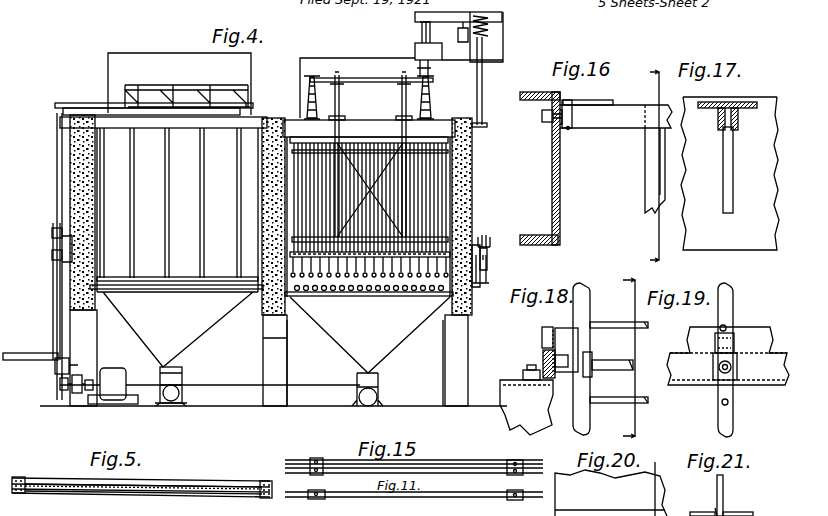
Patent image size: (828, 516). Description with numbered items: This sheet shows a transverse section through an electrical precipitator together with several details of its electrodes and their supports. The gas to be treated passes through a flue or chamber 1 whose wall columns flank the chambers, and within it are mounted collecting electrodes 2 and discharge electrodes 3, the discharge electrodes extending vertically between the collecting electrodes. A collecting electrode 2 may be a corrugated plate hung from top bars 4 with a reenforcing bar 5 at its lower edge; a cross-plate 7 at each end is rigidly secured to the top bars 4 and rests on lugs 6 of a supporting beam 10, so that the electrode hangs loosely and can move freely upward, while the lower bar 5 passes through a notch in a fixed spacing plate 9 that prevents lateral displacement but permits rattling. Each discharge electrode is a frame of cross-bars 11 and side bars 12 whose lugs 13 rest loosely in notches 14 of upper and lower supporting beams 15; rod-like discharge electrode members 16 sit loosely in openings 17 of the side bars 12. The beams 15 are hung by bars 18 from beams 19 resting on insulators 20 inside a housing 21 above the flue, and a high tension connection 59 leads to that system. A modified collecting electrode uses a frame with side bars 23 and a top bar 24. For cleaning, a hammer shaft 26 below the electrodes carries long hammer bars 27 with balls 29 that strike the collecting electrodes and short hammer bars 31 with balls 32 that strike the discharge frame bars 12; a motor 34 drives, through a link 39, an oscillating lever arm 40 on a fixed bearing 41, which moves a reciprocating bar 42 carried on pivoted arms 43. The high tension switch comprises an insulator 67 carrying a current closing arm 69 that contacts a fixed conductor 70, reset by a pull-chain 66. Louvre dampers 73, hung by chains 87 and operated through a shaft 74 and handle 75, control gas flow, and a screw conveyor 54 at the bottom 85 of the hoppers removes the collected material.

In FIG. 4, the flue or chamber 1 is at (93, 178).
In FIG. 4, the collecting electrode 2 is at (447, 200).
In FIG. 5, the collecting electrode 2 is at (195, 486).
In FIG. 16, the collecting electrode 2 is at (652, 175).
In FIG. 17, the collecting electrode 2 is at (727, 157).
In FIG. 20, the collecting electrode 2 is at (633, 492).
In FIG. 21, the collecting electrode 2 is at (723, 492).
In FIG. 4, the discharge electrode 3 is at (445, 217).
In FIG. 5, the top bar 4 is at (53, 479).
In FIG. 16, the top bar 4 is at (630, 123).
In FIG. 17, the top bar 4 is at (713, 112).
In FIG. 21, the reenforcing bar 5 is at (715, 508).
In FIG. 16, the lug 6 is at (568, 128).
In FIG. 17, the lug 6 is at (733, 103).
In FIG. 5, the cross-plate 7 is at (20, 477).
In FIG. 16, the cross-plate 7 is at (613, 100).
In FIG. 17, the cross-plate 7 is at (757, 102).
In FIG. 21, the spacing plate 9 is at (700, 512).
In FIG. 16, the supporting beam 10 is at (560, 200).
In FIG. 18, the cross-bar 11 is at (612, 370).
In FIG. 19, the cross-bar 11 is at (717, 372).
In FIG. 18, the side bar 12 is at (583, 307).
In FIG. 19, the side bar 12 is at (733, 417).
In FIG. 18, the lug 13 is at (542, 332).
In FIG. 19, the notch 14 is at (730, 325).
In FIG. 18, the supporting beam 15 is at (543, 356).
In FIG. 19, the supporting beam 15 is at (750, 338).
In FIG. 18, the discharge electrode member 16 is at (612, 327).
In FIG. 19, the discharge electrode member 16 is at (728, 402).
In FIG. 16, the hole or opening 17 is at (645, 167).
In FIG. 4, the bar 18 is at (339, 95).
In FIG. 4, the beam 19 is at (363, 78).
In FIG. 18, the beam 19 is at (621, 358).
In FIG. 4, the insulator 20 is at (307, 98).
In FIG. 4, the housing 21 is at (300, 72).
In FIG. 20, the housing 21 is at (654, 482).
In FIG. 15, the side bar 23 is at (310, 459).
In FIG. 15, the top bar 24 is at (485, 473).
In FIG. 4, the hammer shaft 26 is at (292, 254).
In FIG. 4, the long hammer bar 27 is at (345, 293).
In FIG. 4, the ball 29 is at (363, 294).
In FIG. 4, the short hammer bar 31 is at (292, 272).
In FIG. 4, the ball 32 is at (394, 294).
In FIG. 4, the motor 34 is at (120, 372).
In FIG. 4, the link 39 is at (60, 313).
In FIG. 4, the oscillating lever arm 40 is at (494, 239).
In FIG. 4, the fixed bearing 41 is at (492, 245).
In FIG. 4, the reciprocating bar 42 is at (486, 284).
In FIG. 4, the pivoted arm 43 is at (490, 262).
In FIG. 4, the screw conveyor 54 is at (183, 399).
In FIG. 4, the connection 59 is at (427, 70).
In FIG. 4, the pull-chain or cable 66 is at (483, 65).
In FIG. 4, the insulator 67 is at (504, 22).
In FIG. 4, the current closing arm 69 is at (462, 26).
In FIG. 4, the fixed conductor 70 is at (417, 15).
In FIG. 4, the louvre damper 73 is at (165, 225).
In FIG. 4, the shaft 74 is at (58, 337).
In FIG. 4, the handle 75 is at (23, 356).
In FIG. 4, the bottom 85 is at (184, 370).
In FIG. 4, the chain 87 is at (125, 100).